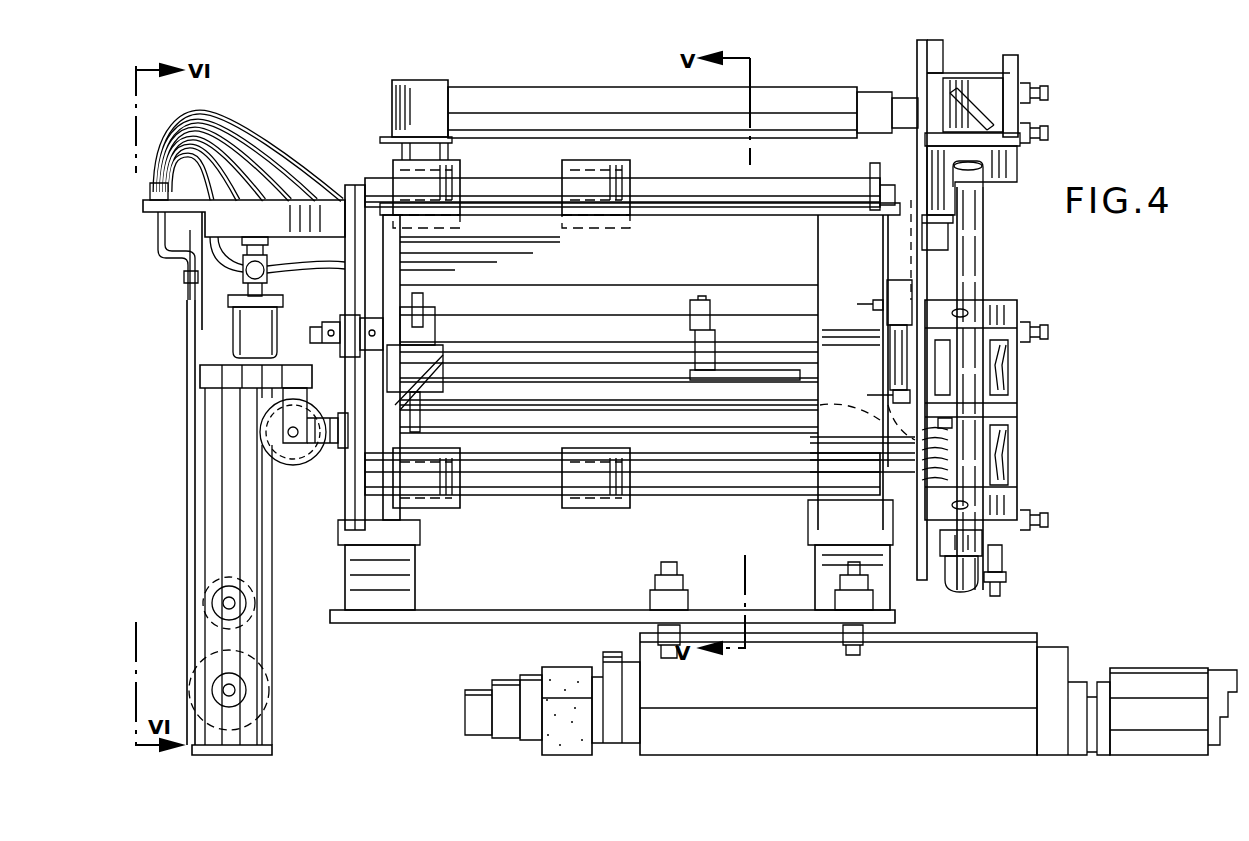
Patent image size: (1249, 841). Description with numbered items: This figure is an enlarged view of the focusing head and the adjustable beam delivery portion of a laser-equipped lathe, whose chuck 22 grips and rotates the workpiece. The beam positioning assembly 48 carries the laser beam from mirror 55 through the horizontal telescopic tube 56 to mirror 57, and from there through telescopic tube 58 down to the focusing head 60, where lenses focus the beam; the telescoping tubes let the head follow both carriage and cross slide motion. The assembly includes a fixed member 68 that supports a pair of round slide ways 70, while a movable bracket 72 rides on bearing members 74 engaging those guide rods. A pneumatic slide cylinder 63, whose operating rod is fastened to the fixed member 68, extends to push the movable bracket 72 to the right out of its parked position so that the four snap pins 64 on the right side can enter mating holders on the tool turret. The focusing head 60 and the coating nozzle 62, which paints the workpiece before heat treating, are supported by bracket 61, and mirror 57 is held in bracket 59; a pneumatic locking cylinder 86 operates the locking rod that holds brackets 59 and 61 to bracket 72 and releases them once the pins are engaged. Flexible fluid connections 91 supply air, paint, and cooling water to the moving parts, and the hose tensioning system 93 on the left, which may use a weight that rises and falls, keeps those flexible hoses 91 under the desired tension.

The chuck 22 is at (1140, 683).
The beam positioning assembly 48 is at (823, 67).
The mirror 55 is at (414, 88).
The telescopic tube 56 is at (548, 100).
The mirror 57 is at (960, 95).
The telescopic tube 58 is at (970, 246).
The bracket 59 is at (1012, 68).
The focusing head 60 is at (956, 570).
The bracket 61 is at (1016, 400).
The coating nozzle 62 is at (1005, 560).
The pneumatic slide cylinder 63 is at (555, 325).
The snap pins 64 is at (1048, 93).
The fixed member 68 is at (520, 622).
The round slide ways 70 is at (680, 185).
The movable bracket 72 is at (350, 291).
The bearing members 74 is at (455, 175).
The pneumatic locking cylinder 86 is at (898, 360).
The flexible fluid connections 91 is at (200, 115).
The hose tensioning system 93 is at (238, 588).